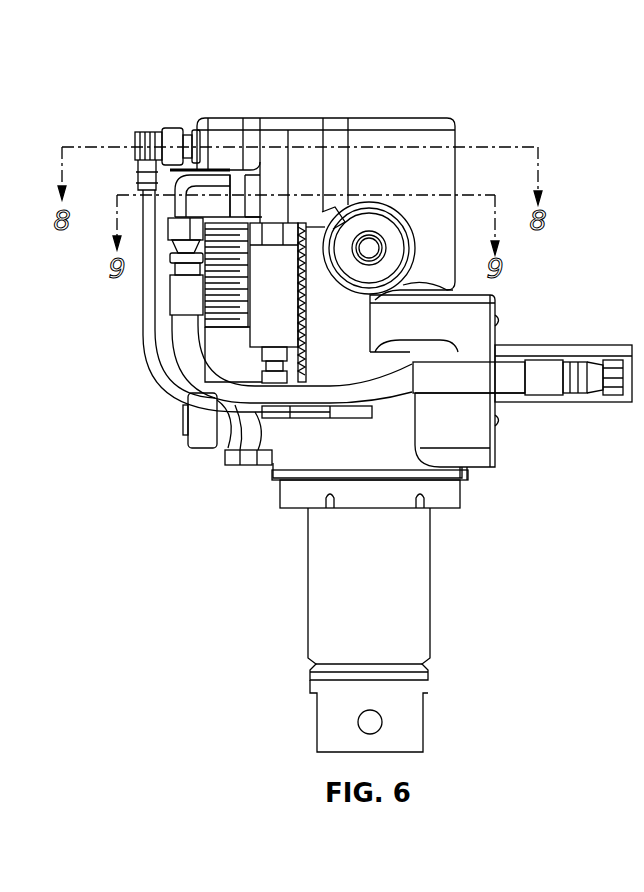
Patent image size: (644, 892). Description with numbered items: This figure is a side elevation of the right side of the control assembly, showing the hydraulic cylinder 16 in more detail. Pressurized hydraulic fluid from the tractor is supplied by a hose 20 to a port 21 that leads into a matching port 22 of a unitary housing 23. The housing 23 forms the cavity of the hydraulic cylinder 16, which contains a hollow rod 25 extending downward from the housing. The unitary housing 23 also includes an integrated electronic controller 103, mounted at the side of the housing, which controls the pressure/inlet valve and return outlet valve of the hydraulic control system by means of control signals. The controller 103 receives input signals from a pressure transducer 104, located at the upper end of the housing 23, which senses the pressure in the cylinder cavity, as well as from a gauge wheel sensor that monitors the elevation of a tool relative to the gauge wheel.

The hydraulic cylinder 16 is at (440, 510).
The hose 20 is at (190, 338).
The port 21 is at (183, 188).
The matching port 22 is at (217, 190).
The unitary housing 23 is at (400, 117).
The hollow rod 25 is at (432, 614).
The integrated electronic controller 103 is at (497, 440).
The pressure transducer 104 is at (172, 132).